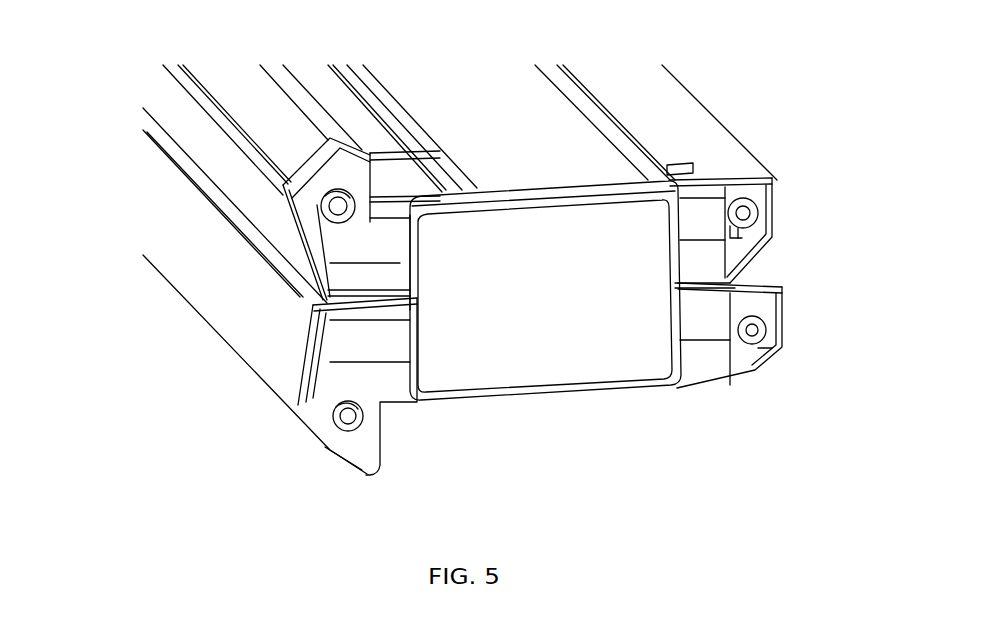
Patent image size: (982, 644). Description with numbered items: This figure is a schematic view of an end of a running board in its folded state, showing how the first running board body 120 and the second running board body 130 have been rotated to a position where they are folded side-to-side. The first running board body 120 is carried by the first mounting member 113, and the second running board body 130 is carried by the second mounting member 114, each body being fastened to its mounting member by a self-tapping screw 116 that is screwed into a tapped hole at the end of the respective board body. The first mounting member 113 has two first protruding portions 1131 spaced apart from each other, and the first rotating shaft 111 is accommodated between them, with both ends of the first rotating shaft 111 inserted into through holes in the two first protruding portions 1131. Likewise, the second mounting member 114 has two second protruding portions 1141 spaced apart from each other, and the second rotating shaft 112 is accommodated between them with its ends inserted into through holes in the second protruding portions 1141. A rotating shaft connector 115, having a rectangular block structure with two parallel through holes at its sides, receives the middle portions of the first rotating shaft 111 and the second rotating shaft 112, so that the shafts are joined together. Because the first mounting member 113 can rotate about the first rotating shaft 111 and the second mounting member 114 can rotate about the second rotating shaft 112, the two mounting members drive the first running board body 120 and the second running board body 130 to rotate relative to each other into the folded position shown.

The first rotating shaft 111 is at (757, 349).
The second rotating shaft 112 is at (740, 236).
The first mounting member 113 is at (357, 386).
The second mounting member 114 is at (361, 224).
The rotating shaft connector 115 is at (483, 376).
The self-tapping screw 116 is at (332, 205).
The first running board body 120 is at (187, 255).
The second running board body 130 is at (640, 115).
The first protruding portion 1131 is at (705, 387).
The second protruding portion 1141 is at (708, 216).